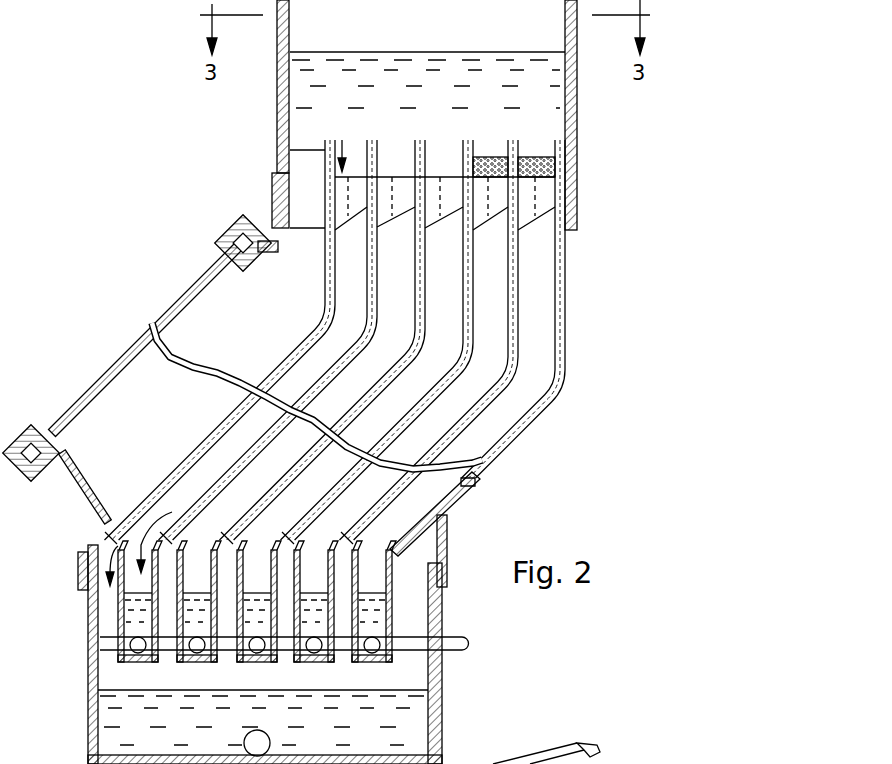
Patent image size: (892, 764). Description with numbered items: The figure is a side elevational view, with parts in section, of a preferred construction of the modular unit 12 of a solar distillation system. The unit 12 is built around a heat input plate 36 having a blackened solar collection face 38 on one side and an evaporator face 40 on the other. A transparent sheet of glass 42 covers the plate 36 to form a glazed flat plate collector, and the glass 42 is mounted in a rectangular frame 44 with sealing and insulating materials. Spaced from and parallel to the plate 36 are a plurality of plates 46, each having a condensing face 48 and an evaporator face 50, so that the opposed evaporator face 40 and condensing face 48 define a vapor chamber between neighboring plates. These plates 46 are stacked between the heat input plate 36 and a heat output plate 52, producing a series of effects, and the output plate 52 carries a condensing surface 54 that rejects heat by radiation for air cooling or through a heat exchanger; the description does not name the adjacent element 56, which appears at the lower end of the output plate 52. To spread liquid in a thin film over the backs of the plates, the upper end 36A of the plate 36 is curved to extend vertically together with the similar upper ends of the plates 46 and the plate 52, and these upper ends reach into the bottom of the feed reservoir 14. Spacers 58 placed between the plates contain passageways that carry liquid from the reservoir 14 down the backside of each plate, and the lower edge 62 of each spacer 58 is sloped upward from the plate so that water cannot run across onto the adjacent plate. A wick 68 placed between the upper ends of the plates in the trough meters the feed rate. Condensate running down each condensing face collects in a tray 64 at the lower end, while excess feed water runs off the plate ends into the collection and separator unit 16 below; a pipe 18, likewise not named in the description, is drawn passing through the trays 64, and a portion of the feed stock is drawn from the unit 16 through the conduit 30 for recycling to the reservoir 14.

The modular unit 12 is at (580, 377).
The feed reservoir 14 is at (577, 108).
The collection and separator unit 16 is at (88, 650).
The pipe 18 is at (450, 640).
The conduit 30 is at (270, 743).
The heat input plate 36 is at (300, 360).
The upper end of plate 36A is at (327, 143).
The solar collection face 38 is at (318, 340).
The evaporator face 40 is at (308, 352).
The glass 42 is at (182, 292).
The frame 44 is at (228, 222).
The plate 46 is at (365, 345).
The condensing face 48 is at (369, 312).
The evaporator face 50 is at (333, 378).
The heat output plate 52 is at (535, 419).
The condensing surface 54 is at (515, 424).
The bottom plate 56 is at (482, 462).
The spacers 58 is at (453, 177).
The lower edge of spacer 62 is at (365, 228).
The collection tray 64 is at (203, 658).
The wick 68 is at (540, 165).